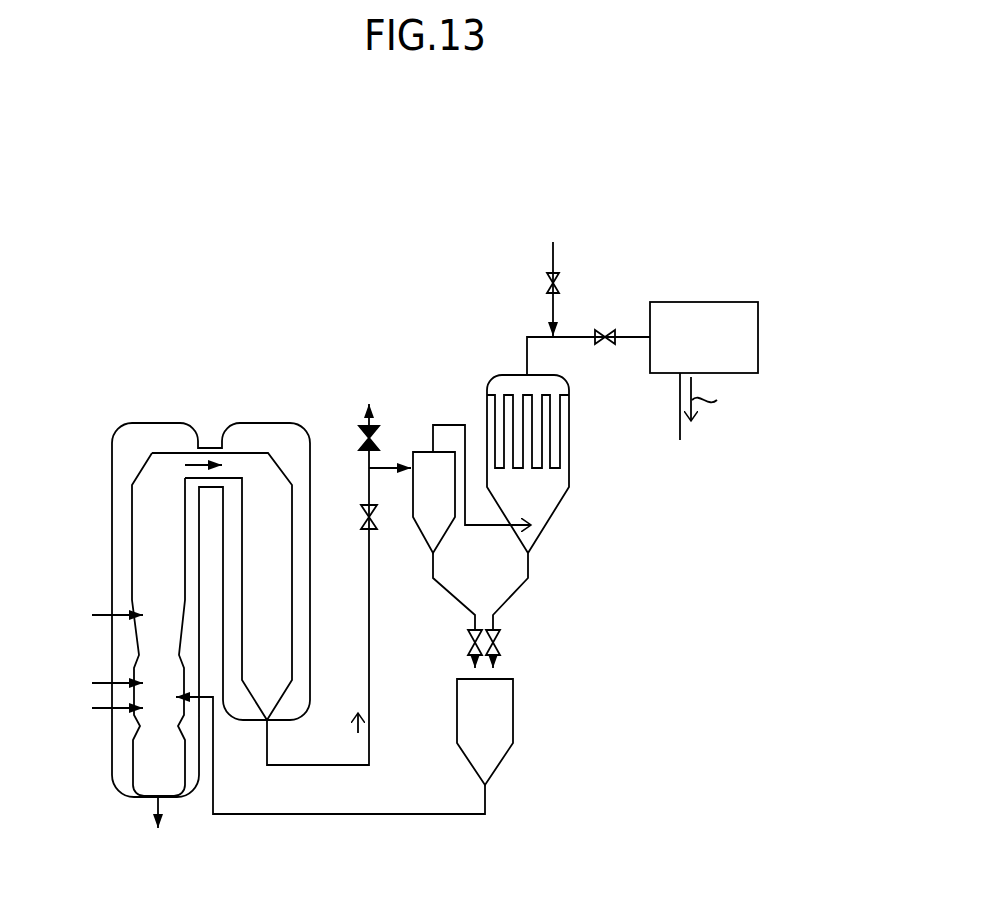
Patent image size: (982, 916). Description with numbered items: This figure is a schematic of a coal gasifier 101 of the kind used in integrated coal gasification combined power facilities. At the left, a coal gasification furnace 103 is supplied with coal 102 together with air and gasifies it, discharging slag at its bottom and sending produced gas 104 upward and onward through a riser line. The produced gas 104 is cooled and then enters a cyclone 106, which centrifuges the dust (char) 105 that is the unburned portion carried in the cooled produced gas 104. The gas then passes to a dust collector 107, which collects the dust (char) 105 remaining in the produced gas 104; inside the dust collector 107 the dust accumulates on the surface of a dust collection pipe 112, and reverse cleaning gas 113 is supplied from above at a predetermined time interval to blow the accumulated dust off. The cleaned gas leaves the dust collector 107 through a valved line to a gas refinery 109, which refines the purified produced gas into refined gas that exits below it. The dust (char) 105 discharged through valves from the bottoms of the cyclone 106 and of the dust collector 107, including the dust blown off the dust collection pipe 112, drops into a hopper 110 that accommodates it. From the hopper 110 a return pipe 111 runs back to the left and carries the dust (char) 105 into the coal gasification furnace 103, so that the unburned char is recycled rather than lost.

The coal gasifier 101 is at (298, 194).
The coal 102 is at (91, 662).
The coal gasification furnace 103 is at (141, 411).
The produced gas 104 is at (209, 465).
The dust (char) 105 is at (256, 409).
The cyclone 106 is at (423, 538).
The dust collector 107 is at (481, 366).
The gas refinery 109 is at (753, 298).
The hopper 110 is at (515, 710).
The return pipe 111 is at (455, 815).
The dust collection pipe 112 is at (560, 440).
The reverse cleaning gas 113 is at (570, 263).